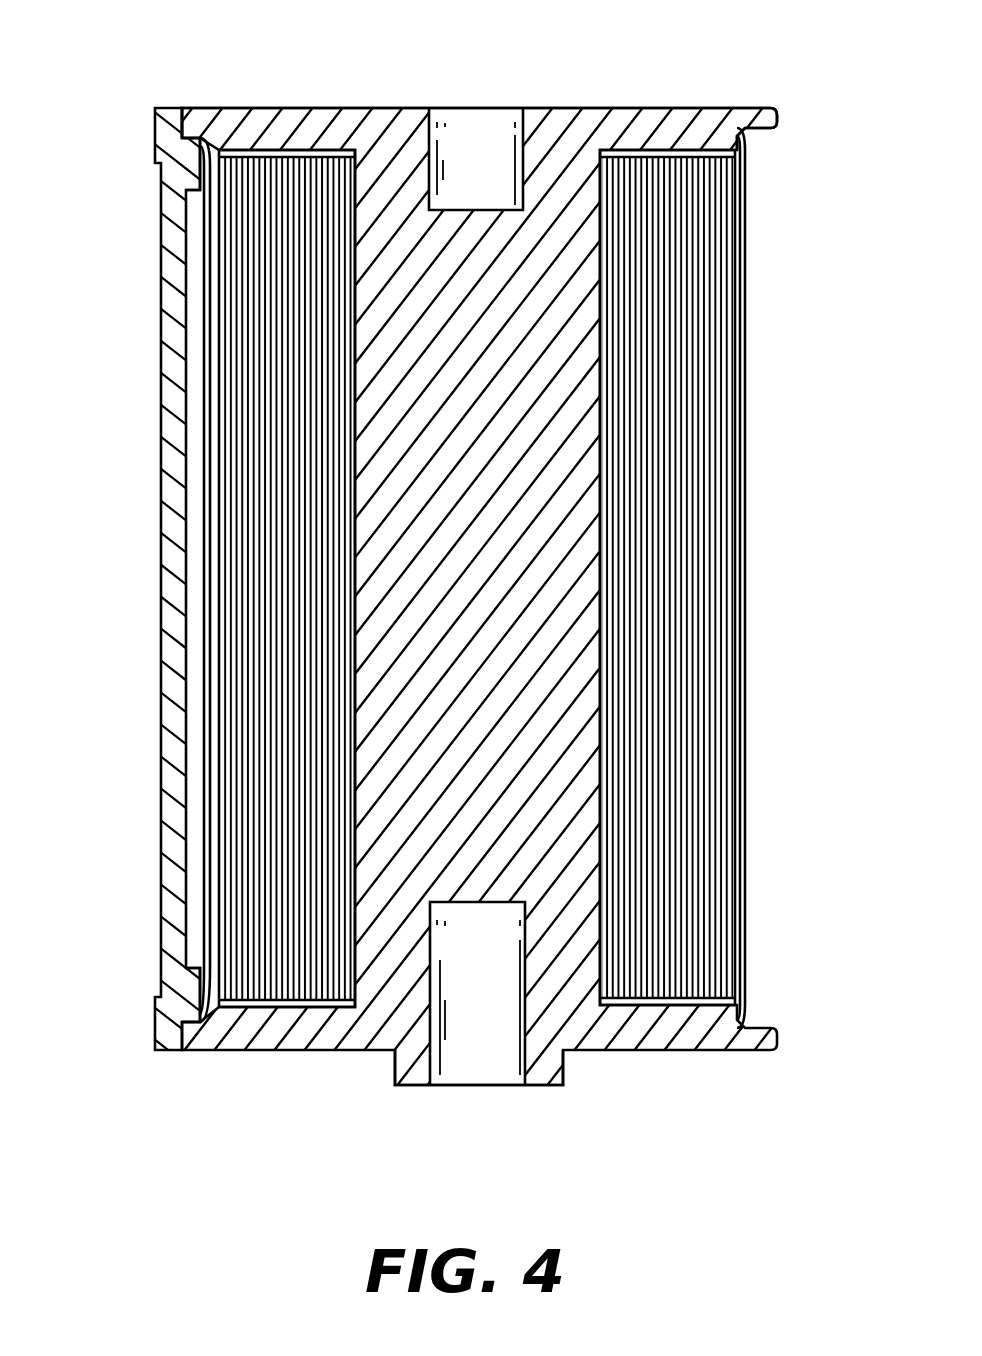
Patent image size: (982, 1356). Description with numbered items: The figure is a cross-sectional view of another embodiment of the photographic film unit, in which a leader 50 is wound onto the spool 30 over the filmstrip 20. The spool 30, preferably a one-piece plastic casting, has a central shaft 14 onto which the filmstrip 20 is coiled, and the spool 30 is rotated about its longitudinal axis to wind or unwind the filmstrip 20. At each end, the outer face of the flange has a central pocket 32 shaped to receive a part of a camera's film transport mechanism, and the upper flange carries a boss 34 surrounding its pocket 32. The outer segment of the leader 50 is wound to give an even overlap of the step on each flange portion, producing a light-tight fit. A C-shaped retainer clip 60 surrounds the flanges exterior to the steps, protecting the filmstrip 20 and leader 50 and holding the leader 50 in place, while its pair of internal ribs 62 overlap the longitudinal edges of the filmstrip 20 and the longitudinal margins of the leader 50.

The shaft 14 is at (540, 688).
The filmstrip 20 is at (268, 682).
The spool 30 is at (351, 108).
The central pocket 32 is at (478, 124).
The boss 34 is at (415, 1069).
The leader 50 is at (745, 542).
The retainer clip 60 is at (162, 478).
The internal ribs 62 is at (194, 162).